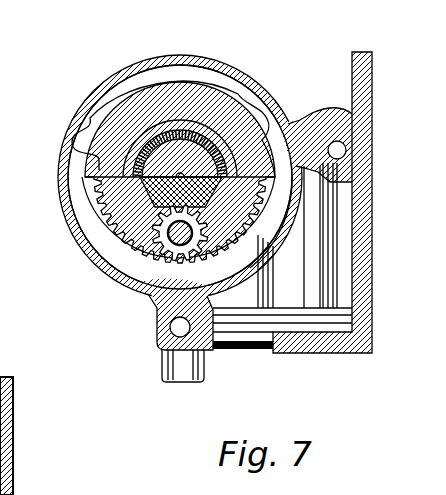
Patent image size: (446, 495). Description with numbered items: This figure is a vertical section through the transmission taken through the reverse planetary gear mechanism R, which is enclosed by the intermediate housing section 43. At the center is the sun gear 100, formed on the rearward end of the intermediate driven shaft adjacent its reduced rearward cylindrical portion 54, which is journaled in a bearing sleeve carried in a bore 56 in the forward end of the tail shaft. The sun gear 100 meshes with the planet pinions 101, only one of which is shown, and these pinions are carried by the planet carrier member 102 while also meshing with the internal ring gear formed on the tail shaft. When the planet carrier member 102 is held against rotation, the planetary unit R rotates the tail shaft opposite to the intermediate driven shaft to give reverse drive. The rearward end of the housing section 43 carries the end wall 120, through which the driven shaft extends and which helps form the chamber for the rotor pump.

The intermediate housing section 43 is at (184, 56).
The end wall 120 is at (226, 98).
The reduced rearward cylindrical portion 54 is at (150, 158).
The bore 56 is at (162, 137).
The sun gear 100 is at (246, 176).
The planet pinions 101 is at (135, 280).
The planet carrier member 102 is at (88, 202).
The reverse planetary gear mechanism R is at (108, 246).